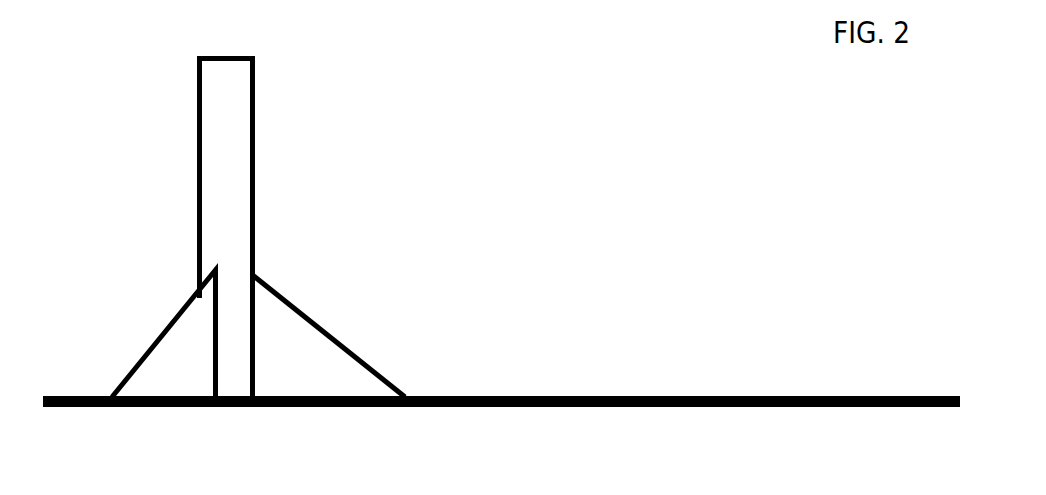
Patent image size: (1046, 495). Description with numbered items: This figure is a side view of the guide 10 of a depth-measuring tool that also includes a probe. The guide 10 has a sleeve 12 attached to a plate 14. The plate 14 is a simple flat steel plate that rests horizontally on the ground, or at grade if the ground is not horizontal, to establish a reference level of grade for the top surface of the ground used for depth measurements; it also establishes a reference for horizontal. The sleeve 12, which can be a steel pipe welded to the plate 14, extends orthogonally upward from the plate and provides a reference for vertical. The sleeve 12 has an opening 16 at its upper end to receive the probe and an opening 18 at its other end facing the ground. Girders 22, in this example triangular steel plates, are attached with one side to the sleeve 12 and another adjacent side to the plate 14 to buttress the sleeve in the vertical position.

The guide 10 is at (398, 280).
The sleeve 12 is at (215, 117).
The plate 14 is at (655, 397).
The opening 16 is at (222, 56).
The opening 18 is at (232, 406).
The girders 22 is at (182, 358).